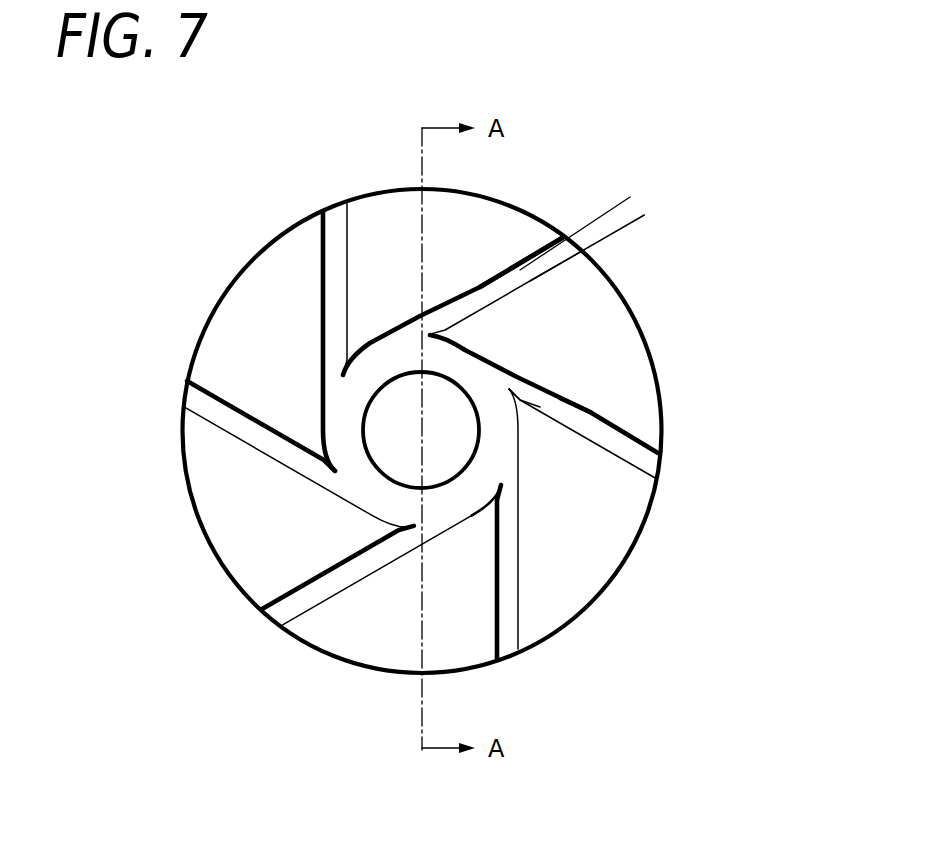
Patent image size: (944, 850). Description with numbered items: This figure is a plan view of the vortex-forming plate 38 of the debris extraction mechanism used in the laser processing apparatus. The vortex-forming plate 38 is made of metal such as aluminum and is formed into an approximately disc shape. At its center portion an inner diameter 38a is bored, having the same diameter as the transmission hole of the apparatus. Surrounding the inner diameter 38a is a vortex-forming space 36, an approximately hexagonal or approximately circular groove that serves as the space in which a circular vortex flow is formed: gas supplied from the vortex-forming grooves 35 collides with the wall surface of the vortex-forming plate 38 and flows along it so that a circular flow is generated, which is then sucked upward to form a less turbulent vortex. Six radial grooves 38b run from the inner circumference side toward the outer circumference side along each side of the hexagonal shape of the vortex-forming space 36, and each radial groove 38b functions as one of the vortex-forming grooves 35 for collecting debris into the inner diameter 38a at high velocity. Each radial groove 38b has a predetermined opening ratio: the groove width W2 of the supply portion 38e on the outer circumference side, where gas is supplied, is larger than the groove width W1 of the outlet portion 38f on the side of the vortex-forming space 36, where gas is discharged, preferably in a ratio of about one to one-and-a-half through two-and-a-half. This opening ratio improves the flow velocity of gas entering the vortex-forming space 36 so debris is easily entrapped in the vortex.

The vortex-forming groove 35 is at (621, 443).
The vortex-forming space 36 is at (481, 430).
The vortex-forming plate 38 is at (665, 533).
The inner diameter 38a is at (512, 383).
The radial groove 38b is at (333, 235).
The supply portion 38e is at (555, 253).
The outlet portion 38f is at (509, 285).
The groove width of outlet portion W1 is at (443, 253).
The groove width of supply portion W2 is at (601, 173).